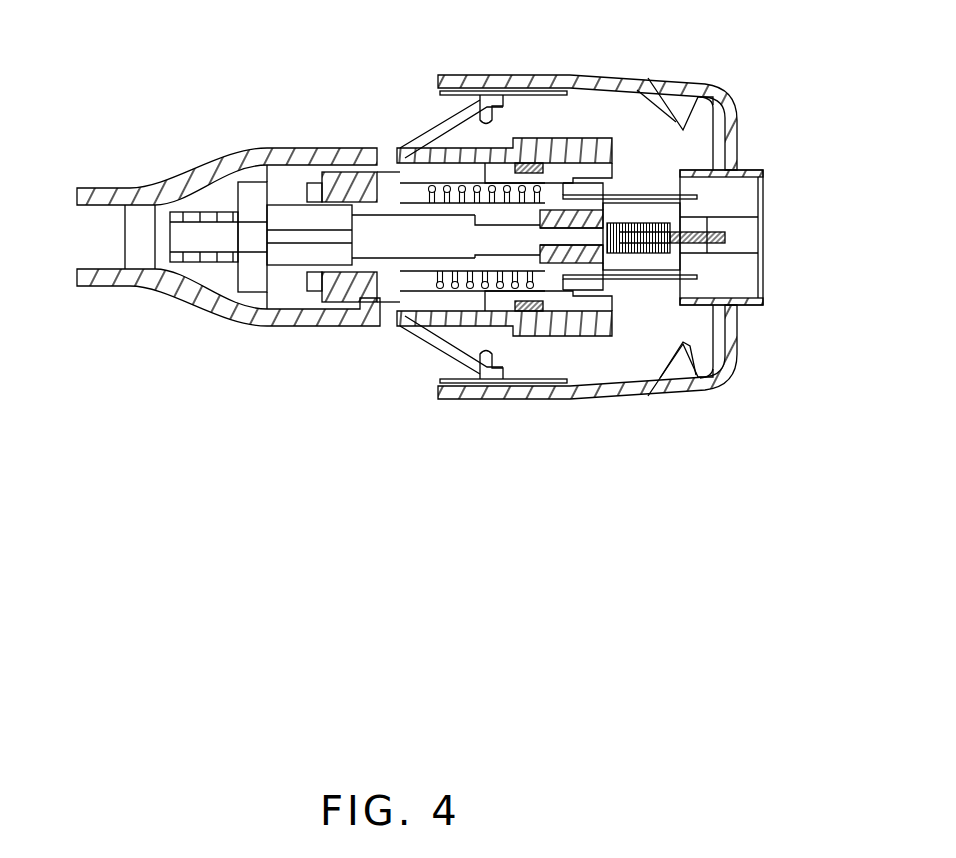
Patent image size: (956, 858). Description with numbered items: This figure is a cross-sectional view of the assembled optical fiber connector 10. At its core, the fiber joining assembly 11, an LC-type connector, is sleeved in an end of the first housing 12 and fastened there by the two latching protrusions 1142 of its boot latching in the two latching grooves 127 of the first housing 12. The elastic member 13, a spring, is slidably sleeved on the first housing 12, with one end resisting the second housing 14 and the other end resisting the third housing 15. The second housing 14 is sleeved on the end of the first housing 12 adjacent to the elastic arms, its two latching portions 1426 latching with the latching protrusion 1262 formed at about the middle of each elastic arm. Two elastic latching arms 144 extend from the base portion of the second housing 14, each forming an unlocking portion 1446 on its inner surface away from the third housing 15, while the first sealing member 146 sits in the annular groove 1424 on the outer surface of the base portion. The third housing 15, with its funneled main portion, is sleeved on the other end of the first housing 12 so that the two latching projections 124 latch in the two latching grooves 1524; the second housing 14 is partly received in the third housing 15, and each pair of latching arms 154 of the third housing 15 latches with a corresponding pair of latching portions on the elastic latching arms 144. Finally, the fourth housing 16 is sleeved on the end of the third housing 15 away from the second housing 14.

The optical fiber connector 10 is at (205, 65).
The fiber joining assembly 11 is at (700, 232).
The first housing 12 is at (383, 213).
The elastic member 13 is at (430, 147).
The second housing 14 is at (750, 172).
The third housing 15 is at (390, 315).
The fourth housing 16 is at (245, 310).
The latching projections 124 is at (305, 203).
The latching grooves 127 is at (538, 162).
The elastic latching arms 144 is at (488, 95).
The first sealing member 146 is at (522, 312).
The latching arms 154 is at (438, 122).
The latching protrusions 1142 is at (572, 209).
The latching protrusion 1262 is at (655, 172).
The annular groove 1424 is at (535, 312).
The latching portions 1426 is at (668, 178).
The unlocking portion 1446 is at (695, 92).
The latching grooves 1524 is at (290, 195).